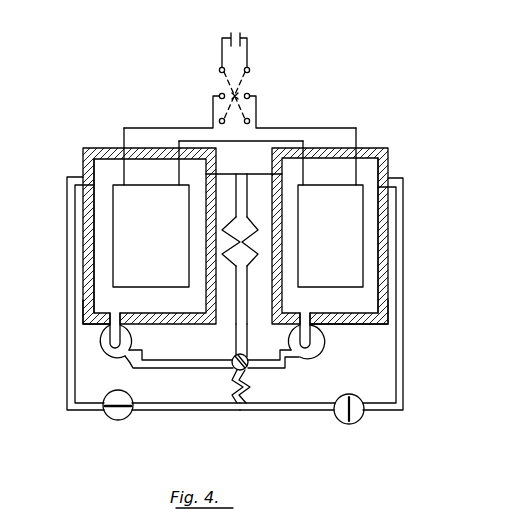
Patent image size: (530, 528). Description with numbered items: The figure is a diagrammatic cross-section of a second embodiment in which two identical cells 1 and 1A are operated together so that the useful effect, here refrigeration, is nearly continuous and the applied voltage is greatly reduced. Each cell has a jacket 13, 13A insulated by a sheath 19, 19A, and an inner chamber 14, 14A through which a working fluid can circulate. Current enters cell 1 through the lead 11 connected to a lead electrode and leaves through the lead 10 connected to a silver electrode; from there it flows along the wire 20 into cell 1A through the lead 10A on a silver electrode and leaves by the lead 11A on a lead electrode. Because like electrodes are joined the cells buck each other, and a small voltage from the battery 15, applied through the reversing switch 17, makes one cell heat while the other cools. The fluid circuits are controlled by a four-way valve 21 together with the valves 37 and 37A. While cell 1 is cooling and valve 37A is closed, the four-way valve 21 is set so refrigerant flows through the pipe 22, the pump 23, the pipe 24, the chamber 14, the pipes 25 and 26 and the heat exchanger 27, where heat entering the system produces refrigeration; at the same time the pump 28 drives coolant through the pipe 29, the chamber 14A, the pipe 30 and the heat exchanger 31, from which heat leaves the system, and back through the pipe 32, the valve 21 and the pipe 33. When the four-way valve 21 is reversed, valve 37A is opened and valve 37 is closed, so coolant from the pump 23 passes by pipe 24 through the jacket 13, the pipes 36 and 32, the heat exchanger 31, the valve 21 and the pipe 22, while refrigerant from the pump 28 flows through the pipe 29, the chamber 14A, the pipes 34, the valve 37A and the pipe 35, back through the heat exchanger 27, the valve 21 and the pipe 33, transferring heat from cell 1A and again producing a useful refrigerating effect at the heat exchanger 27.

The cell 1 is at (132, 239).
The second cell 1A is at (343, 238).
The lead 10 is at (179, 174).
The lead 10A is at (308, 172).
The lead 11 is at (123, 173).
The lead 11A is at (356, 174).
The jacket 13 is at (100, 266).
The jacket 13A is at (374, 270).
The chamber 14 is at (105, 225).
The chamber 14A is at (372, 218).
The battery 15 is at (256, 19).
The reversing switch 17 is at (243, 91).
The sheath 19 is at (88, 281).
The sheath 19A is at (381, 290).
The wire 20 is at (247, 141).
The four-way valve 21 is at (233, 368).
The pipe 22 is at (178, 362).
The pump 23 is at (133, 336).
The pipe 24 is at (98, 340).
The pipe 25 is at (67, 192).
The pipe 26 is at (165, 411).
The heat exchanger 27 is at (247, 381).
The pump 28 is at (322, 344).
The pipe 29 is at (311, 335).
The pipe 30 is at (260, 180).
The heat exchanger 31 is at (242, 246).
The pipe 32 is at (247, 319).
The pipe 33 is at (260, 362).
The pipes 34 is at (396, 199).
The pipe 35 is at (298, 411).
The pipe 36 is at (232, 182).
The valve 37 is at (118, 421).
The valve 37A is at (349, 425).